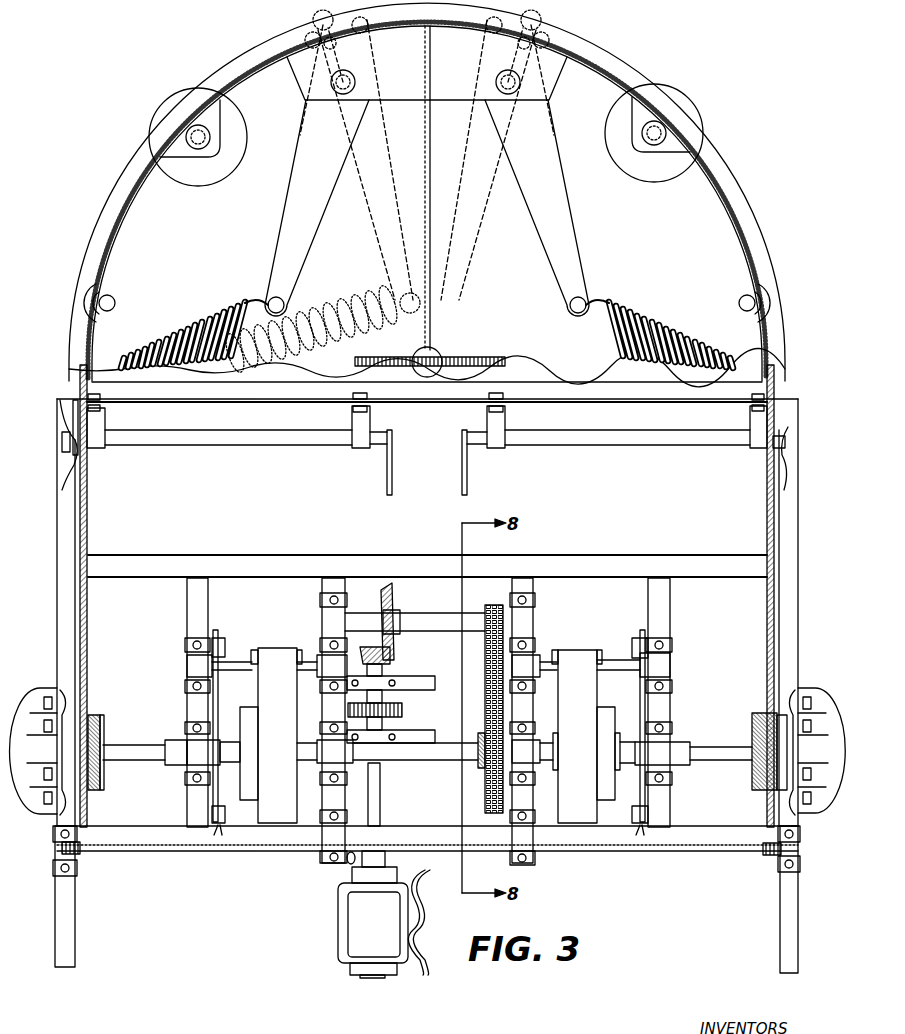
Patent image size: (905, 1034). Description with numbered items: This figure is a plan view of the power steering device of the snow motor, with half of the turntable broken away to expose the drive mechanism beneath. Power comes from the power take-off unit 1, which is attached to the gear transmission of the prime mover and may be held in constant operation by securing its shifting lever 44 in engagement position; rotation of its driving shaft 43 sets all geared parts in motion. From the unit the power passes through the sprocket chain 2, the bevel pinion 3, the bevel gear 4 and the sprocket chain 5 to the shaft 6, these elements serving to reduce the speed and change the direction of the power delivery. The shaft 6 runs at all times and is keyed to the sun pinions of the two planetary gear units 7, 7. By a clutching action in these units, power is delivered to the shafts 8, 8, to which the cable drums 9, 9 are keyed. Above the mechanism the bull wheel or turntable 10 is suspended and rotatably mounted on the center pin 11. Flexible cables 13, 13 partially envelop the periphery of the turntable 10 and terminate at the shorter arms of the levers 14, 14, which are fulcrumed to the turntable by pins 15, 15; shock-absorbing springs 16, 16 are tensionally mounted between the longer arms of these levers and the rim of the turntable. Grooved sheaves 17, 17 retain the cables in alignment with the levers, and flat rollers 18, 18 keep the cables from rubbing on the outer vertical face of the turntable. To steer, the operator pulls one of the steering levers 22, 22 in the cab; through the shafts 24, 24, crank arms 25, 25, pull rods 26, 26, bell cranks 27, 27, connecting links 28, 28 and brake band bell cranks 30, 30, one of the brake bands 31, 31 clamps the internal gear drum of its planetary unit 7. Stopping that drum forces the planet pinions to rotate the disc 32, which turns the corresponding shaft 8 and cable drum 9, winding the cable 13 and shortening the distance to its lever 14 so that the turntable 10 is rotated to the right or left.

The power take-off unit 1 is at (340, 937).
The sprocket chain 2 is at (403, 710).
The bevel pinion 3 is at (390, 664).
The bevel gear 4 is at (394, 590).
The sprocket chain 5 is at (484, 790).
The shaft 6 is at (410, 773).
The planetary gear unit 7 is at (308, 800).
The shaft 8 is at (135, 745).
The cable drum 9 is at (100, 716).
The turntable 10 is at (745, 193).
The center pin 11 is at (440, 352).
The flexible cable 13 is at (90, 528).
The lever 14 is at (275, 248).
The pin 15 is at (355, 90).
The shock-absorbing spring 16 is at (160, 345).
The grooved sheave 17 is at (248, 138).
The flat roller 18 is at (118, 298).
The steering lever 22 is at (387, 466).
The shaft 24 is at (270, 462).
The crank arm 25 is at (70, 428).
The pull rod 26 is at (72, 528).
The bell crank 27 is at (218, 824).
The connecting link 28 is at (216, 718).
The brake band bell crank 30 is at (305, 658).
The brake band 31 is at (275, 678).
The disc 32 is at (250, 730).
The driving shaft 43 is at (385, 822).
The shifting lever 44 is at (347, 862).